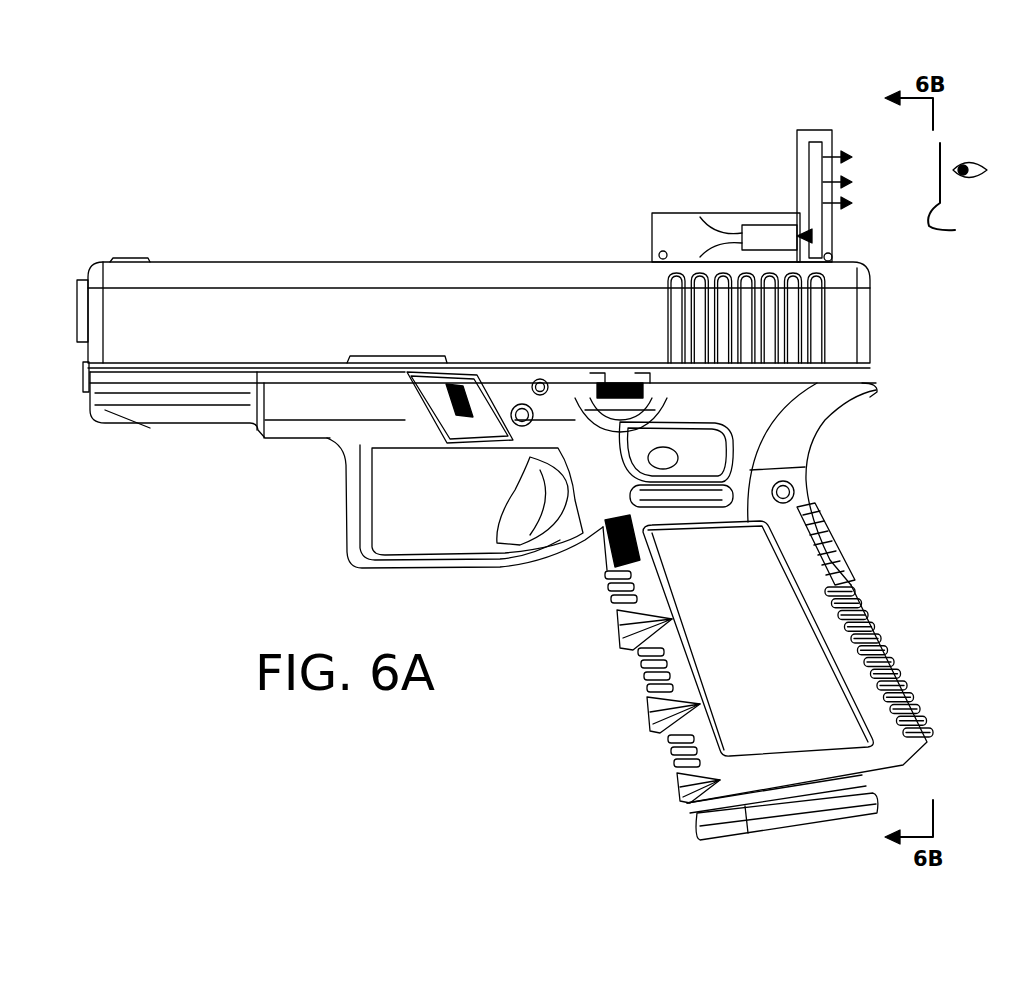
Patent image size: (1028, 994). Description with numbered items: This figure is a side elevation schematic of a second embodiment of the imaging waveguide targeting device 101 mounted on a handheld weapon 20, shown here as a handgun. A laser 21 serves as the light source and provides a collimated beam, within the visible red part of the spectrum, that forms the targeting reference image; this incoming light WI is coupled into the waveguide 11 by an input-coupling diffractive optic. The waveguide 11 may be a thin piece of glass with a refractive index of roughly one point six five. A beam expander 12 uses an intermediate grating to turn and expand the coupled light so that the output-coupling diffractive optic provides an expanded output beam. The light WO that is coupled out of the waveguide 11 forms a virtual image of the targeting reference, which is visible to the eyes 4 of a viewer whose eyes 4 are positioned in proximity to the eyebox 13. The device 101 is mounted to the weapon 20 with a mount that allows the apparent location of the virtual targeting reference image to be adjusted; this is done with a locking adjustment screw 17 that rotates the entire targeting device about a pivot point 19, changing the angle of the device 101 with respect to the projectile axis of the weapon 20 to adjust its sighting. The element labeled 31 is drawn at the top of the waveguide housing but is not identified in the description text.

The imaging waveguide targeting device 101 is at (718, 155).
The waveguide 11 is at (797, 165).
The housing top portion 31 is at (815, 130).
The beam expander 12 is at (816, 147).
The eyes 4 is at (972, 163).
The eyebox 13 is at (955, 230).
The pivot point 19 is at (660, 251).
The laser 21 is at (768, 225).
The light coupled out WO is at (833, 187).
The incoming light WI is at (806, 242).
The adjustment screw 17 is at (830, 259).
The handheld weapon 20 is at (720, 656).